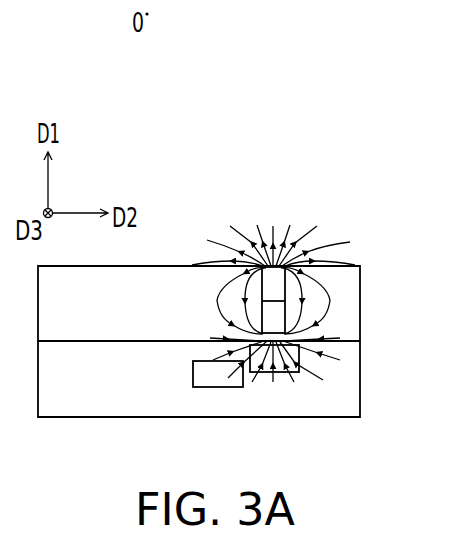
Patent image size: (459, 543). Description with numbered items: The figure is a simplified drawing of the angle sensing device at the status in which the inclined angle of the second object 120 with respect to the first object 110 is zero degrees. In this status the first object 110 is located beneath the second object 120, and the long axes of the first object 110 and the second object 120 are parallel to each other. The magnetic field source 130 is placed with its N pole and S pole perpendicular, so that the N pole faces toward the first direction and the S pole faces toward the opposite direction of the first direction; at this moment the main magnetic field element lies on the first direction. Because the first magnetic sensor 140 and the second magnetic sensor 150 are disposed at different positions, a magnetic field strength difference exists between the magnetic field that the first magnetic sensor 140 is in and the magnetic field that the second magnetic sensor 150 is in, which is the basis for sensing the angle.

The first object 110 is at (83, 407).
The second object 120 is at (163, 272).
The magnetic field source 130 is at (282, 297).
The first magnetic sensor 140 is at (205, 380).
The second magnetic sensor 150 is at (292, 365).